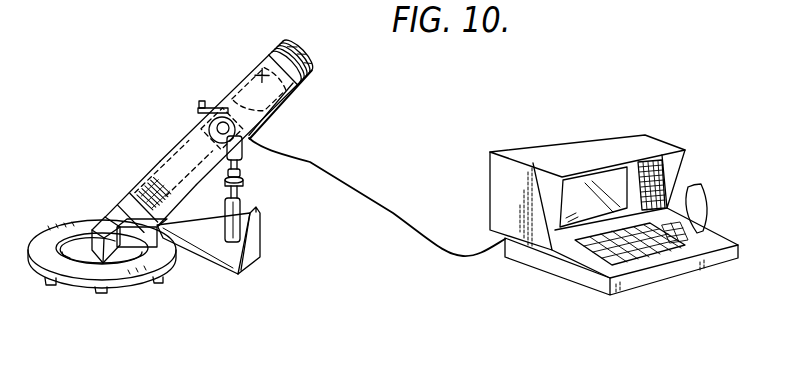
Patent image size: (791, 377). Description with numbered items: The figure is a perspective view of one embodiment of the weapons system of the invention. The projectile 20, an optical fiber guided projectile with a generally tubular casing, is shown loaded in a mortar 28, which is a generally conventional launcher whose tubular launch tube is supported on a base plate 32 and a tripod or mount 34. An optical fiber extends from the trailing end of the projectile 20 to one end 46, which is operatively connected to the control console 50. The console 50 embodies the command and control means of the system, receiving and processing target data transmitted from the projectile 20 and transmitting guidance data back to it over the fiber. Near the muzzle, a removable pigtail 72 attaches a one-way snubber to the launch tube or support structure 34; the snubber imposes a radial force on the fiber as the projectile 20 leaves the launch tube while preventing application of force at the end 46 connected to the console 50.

The projectile 20 is at (262, 72).
The mortar 28 is at (172, 148).
The base plate 32 is at (54, 223).
The tripod or mount 34 is at (243, 228).
The one end 46 is at (466, 256).
The control console 50 is at (668, 281).
The removable pigtail 72 is at (250, 141).